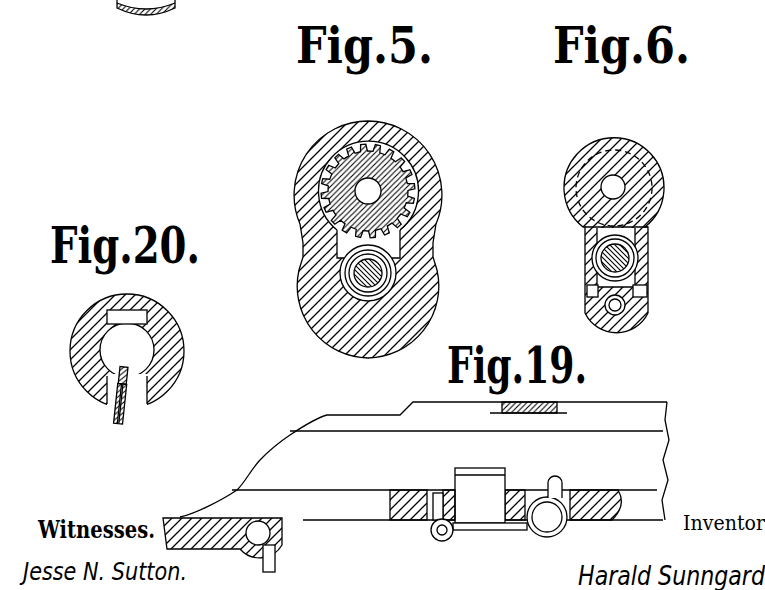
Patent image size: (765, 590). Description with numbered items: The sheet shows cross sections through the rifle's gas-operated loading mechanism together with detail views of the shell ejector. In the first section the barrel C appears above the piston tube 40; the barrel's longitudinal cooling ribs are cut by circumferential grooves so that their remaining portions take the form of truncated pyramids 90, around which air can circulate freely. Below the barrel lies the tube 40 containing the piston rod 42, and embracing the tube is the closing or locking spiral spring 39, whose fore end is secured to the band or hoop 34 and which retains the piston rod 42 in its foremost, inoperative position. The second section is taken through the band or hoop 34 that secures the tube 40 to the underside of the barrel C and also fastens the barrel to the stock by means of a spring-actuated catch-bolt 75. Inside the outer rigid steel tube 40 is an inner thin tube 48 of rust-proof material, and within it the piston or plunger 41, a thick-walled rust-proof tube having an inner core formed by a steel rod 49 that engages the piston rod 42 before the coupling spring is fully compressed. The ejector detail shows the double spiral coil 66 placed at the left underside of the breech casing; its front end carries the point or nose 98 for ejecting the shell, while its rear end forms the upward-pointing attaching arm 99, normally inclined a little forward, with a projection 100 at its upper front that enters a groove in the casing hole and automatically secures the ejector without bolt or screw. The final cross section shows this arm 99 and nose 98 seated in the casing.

In FIG. 5, the barrel C is at (340, 183).
In FIG. 6, the barrel C is at (657, 188).
In FIG. 5, the truncated pyramids 90 is at (413, 173).
In FIG. 5, the tube 40 is at (403, 263).
In FIG. 6, the tube 40 is at (596, 258).
In FIG. 5, the piston rod 42 is at (365, 275).
In FIG. 5, the closing or locking spiral spring 39 is at (368, 298).
In FIG. 6, the band or hoop 34 is at (571, 208).
In FIG. 6, the piston or plunger 41 is at (641, 248).
In FIG. 6, the inner thin tube 48 is at (647, 268).
In FIG. 6, the steel rod 49 is at (601, 267).
In FIG. 6, the catch-bolt 75 is at (617, 314).
In FIG. 20, the point or nose 98 is at (109, 381).
In FIG. 19, the point or nose 98 is at (557, 483).
In FIG. 20, the double spiral coil 66 is at (108, 412).
In FIG. 19, the double spiral coil 66 is at (547, 534).
In FIG. 19, the attaching arm 99 is at (413, 521).
In FIG. 19, the projection 100 is at (438, 493).